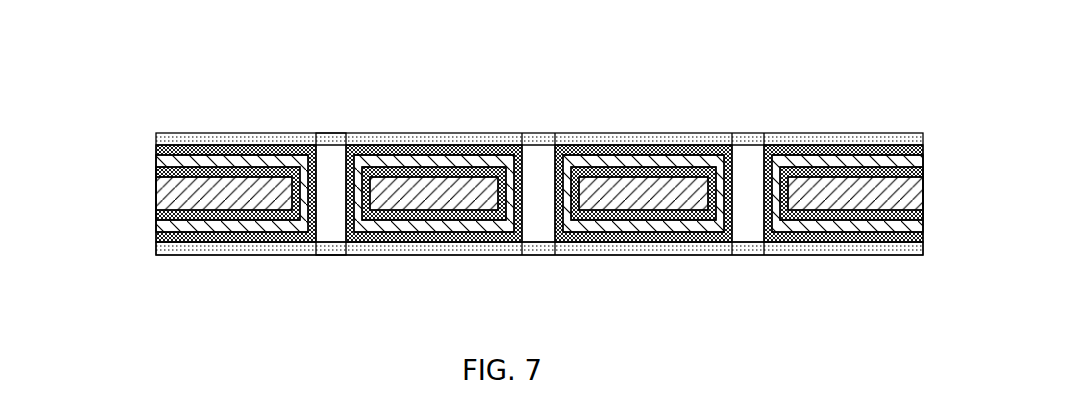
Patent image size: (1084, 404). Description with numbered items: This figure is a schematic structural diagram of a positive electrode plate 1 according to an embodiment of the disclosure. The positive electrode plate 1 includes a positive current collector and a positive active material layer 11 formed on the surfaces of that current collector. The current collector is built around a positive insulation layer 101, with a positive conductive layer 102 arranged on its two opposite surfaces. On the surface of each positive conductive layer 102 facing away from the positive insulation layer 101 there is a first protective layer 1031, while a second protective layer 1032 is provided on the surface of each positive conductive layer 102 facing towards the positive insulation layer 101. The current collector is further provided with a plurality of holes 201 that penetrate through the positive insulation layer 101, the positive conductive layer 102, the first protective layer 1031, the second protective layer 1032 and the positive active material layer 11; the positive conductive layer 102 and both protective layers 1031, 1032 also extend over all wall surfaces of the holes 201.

The positive electrode plate 1 is at (543, 43).
The positive active material layer 11 is at (365, 140).
The positive insulation layer 101 is at (188, 233).
The positive conductive layer 102 is at (155, 160).
The first protective layer 1031 is at (213, 143).
The second protective layer 1032 is at (155, 172).
The holes 201 is at (340, 225).